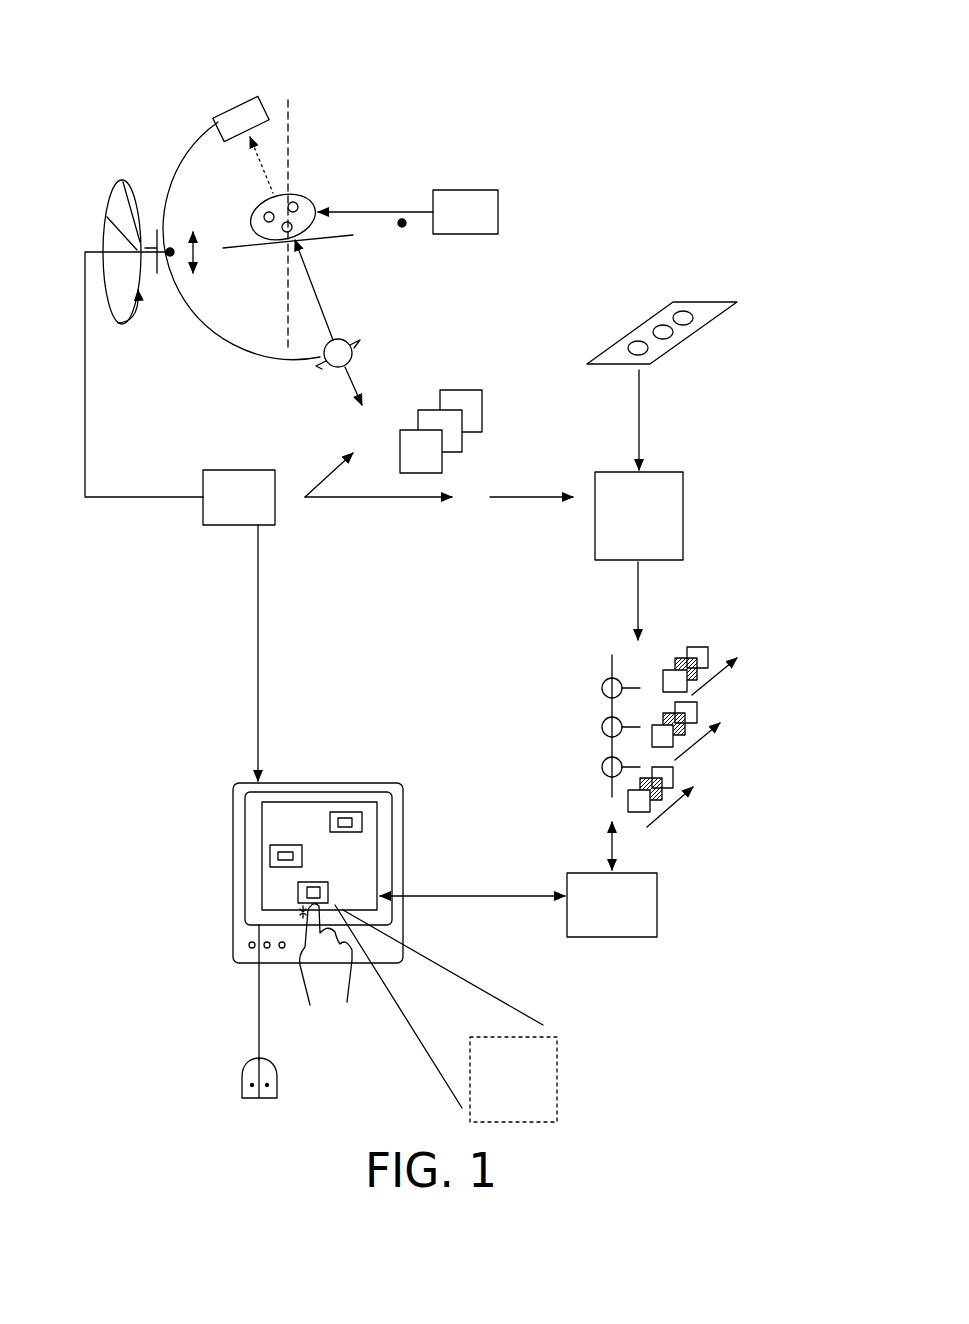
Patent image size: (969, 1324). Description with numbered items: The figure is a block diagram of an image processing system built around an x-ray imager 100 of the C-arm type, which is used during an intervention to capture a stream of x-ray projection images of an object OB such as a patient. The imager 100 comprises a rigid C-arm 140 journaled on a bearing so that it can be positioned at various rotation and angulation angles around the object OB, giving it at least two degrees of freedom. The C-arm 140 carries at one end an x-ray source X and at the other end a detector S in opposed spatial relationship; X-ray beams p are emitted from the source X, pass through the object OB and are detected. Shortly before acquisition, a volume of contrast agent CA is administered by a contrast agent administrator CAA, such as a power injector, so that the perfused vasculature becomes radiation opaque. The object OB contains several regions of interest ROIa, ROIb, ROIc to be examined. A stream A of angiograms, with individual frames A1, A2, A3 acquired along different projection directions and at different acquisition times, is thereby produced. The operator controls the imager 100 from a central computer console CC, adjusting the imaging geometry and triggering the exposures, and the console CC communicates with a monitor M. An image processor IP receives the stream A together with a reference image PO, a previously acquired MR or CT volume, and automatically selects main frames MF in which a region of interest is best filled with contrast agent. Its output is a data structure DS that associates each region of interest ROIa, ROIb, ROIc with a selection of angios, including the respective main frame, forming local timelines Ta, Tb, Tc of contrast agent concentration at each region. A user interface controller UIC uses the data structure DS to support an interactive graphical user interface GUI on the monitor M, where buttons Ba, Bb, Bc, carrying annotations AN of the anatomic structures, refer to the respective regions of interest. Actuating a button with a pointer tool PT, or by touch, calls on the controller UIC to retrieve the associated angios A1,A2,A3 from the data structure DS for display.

The x-ray imager 100 is at (404, 77).
The C-arm 140 is at (190, 304).
The detector S is at (242, 106).
The object OB is at (316, 204).
The region of interest ROIa is at (296, 202).
The region of interest ROIb is at (292, 231).
The region of interest ROIc is at (267, 222).
The contrast agent administrator CAA is at (408, 212).
The contrast agent CA is at (404, 227).
The X-ray beams p is at (318, 290).
The x-ray source X is at (352, 362).
The stream of projection images A is at (479, 401).
The projection image A1 is at (482, 408).
The projection image A2 is at (462, 438).
The projection image A3 is at (442, 463).
The computer console CC is at (388, 617).
The reference image PO is at (733, 301).
The image processor IP is at (639, 556).
The data structure DS is at (552, 654).
The main frames MF is at (721, 713).
The local timeline Ta is at (723, 653).
The local timeline Tb is at (713, 710).
The local timeline Tc is at (690, 775).
The monitor M is at (405, 798).
The graphical user interface GUI is at (378, 850).
The annotations AN is at (330, 820).
The interactive button Ba is at (333, 833).
The interactive button Bb is at (303, 860).
The interactive button Bc is at (330, 892).
The user interface controller UIC is at (612, 905).
The pointer tool PT is at (277, 1078).
The projection images A1,A2,A3 is at (547, 1093).